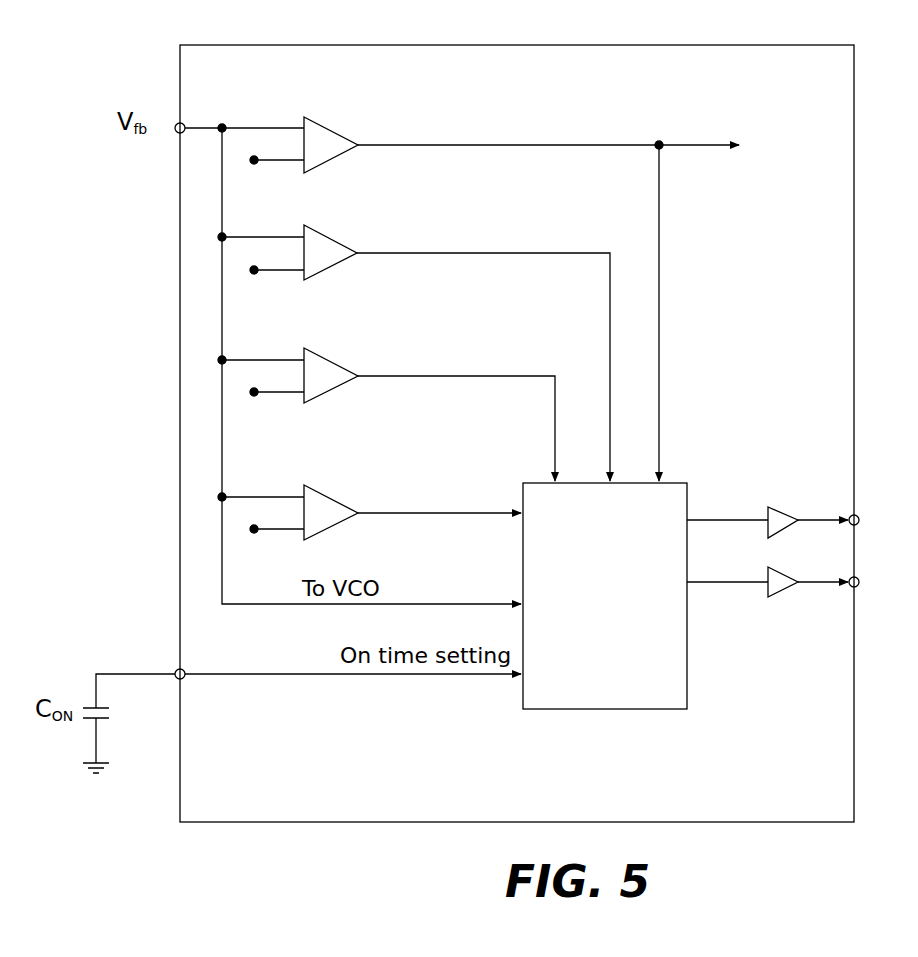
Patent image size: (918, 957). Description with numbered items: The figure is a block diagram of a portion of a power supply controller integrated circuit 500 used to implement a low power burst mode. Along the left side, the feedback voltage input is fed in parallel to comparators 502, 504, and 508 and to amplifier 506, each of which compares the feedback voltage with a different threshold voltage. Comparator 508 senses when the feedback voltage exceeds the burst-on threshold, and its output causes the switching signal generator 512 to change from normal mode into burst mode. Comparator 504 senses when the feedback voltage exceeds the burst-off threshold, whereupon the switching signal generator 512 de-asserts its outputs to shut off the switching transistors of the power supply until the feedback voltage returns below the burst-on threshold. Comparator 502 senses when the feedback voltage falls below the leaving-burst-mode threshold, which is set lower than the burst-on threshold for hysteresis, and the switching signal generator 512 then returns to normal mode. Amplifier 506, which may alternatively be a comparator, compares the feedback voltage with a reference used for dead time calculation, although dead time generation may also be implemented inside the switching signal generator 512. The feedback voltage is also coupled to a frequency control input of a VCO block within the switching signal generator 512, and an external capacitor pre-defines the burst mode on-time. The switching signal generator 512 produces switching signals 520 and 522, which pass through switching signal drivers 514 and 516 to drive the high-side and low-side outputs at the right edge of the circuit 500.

The power supply controller integrated circuit 500 is at (250, 45).
The comparator 502 is at (327, 126).
The comparator 504 is at (323, 231).
The amplifier 506 is at (327, 356).
The comparator 508 is at (322, 490).
The switching signal generator 512 is at (679, 483).
The switching signal driver 514 is at (777, 509).
The switching signal driver 516 is at (782, 569).
The switching signal 520 is at (715, 520).
The switching signal 522 is at (702, 582).